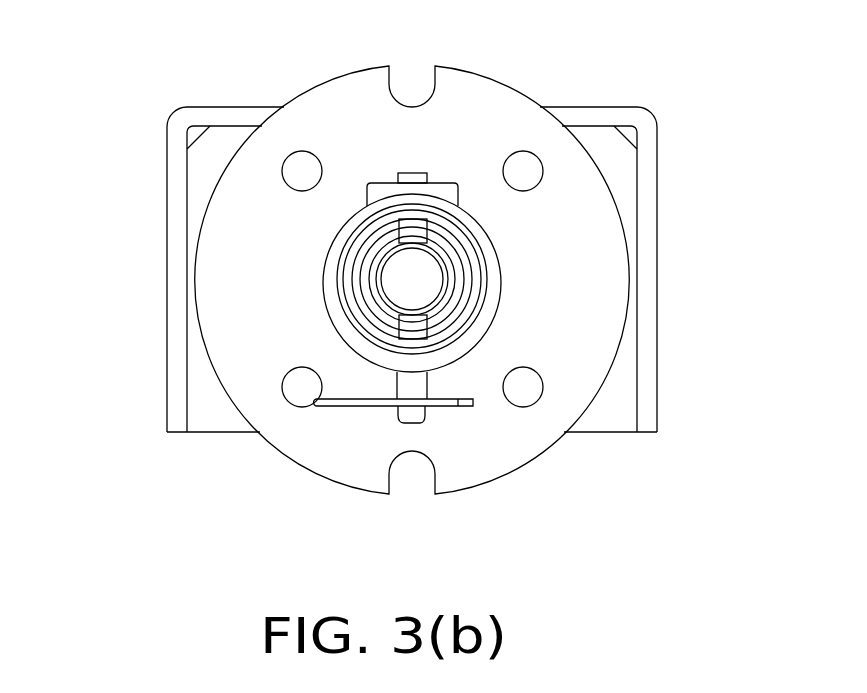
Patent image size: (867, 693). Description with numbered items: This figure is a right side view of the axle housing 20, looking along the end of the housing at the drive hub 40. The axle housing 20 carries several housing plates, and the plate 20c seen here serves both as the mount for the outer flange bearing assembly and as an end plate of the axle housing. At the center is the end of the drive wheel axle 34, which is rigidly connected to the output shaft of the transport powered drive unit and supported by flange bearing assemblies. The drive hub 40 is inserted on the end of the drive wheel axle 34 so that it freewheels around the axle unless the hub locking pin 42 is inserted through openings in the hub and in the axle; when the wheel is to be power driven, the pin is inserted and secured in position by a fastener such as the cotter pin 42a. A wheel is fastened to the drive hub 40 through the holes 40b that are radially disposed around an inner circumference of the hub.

The axle housing 20 is at (234, 117).
The axle housing plate 20c is at (612, 416).
The drive hub 40 is at (353, 105).
The holes 40b is at (303, 171).
The drive wheel axle 34 is at (412, 278).
The hub locking pin 42 is at (412, 387).
The cotter pin 42a is at (383, 403).